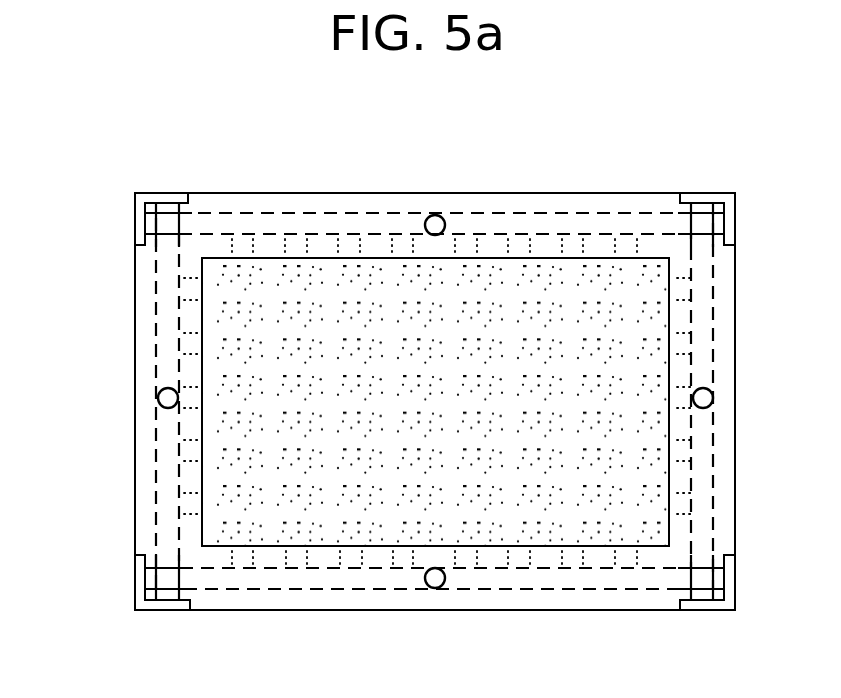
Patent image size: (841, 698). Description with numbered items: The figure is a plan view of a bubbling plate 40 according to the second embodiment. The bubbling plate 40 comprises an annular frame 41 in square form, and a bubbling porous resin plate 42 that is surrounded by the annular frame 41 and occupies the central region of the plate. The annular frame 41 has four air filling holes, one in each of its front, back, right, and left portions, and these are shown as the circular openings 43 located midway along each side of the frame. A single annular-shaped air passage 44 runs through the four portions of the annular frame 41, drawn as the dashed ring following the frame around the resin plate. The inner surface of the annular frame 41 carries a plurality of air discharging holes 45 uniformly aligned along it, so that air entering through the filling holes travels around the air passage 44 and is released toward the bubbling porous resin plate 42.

The bubbling plate 40 is at (111, 191).
The annular frame 41 is at (318, 193).
The bubbling porous resin plate 42 is at (215, 462).
The mounting hole 43 is at (436, 220).
The annular-shaped air passage 44 is at (540, 222).
The stitching 45 is at (187, 295).